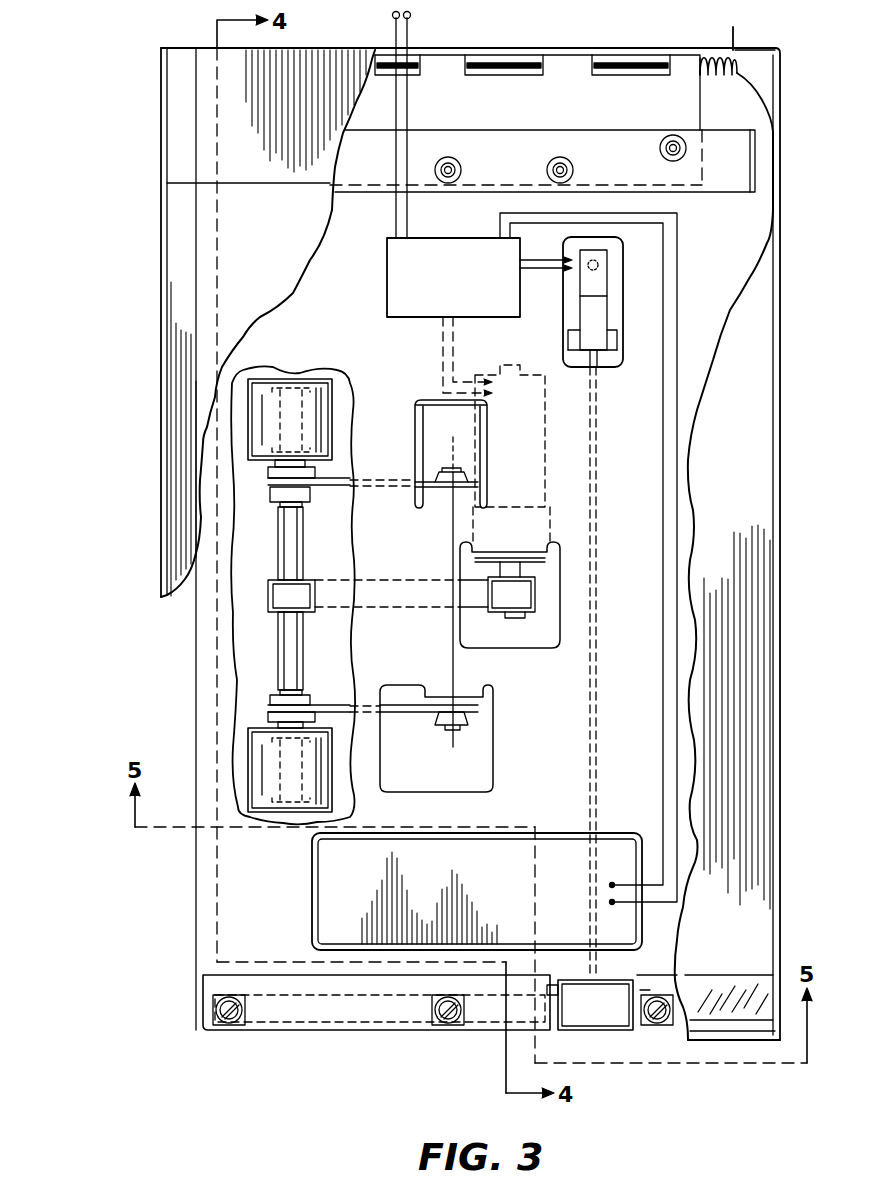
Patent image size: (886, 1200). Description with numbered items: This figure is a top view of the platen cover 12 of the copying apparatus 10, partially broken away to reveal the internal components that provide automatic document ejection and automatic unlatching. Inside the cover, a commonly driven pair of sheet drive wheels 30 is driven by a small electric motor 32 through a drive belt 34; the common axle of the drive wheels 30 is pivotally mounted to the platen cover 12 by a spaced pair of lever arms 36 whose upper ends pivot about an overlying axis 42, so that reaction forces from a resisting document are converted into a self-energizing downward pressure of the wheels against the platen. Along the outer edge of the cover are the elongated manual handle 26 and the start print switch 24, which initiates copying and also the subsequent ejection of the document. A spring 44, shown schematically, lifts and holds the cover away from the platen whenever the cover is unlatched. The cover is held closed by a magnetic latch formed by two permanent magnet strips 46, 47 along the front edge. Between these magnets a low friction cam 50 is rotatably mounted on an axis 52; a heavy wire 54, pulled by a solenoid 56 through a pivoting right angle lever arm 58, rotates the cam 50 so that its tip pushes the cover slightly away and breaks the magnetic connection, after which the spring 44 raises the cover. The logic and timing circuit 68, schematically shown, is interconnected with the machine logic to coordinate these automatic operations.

The copying apparatus 10 is at (118, 215).
The platen cover 12 is at (178, 352).
The start print switch 24 is at (312, 900).
The manual handle 26 is at (735, 985).
The sheet drive wheels 30 is at (318, 440).
The electric motor 32 is at (478, 432).
The drive belt 34 is at (481, 598).
The lever arms 36 is at (333, 490).
The axis 42 is at (453, 738).
The spring 44 is at (709, 57).
The permanent magnet strip 46 is at (332, 1032).
The permanent magnet strip 47 is at (664, 1018).
The cam 50 is at (612, 1014).
The axis 52 is at (552, 988).
The wire 54 is at (598, 353).
The solenoid 56 is at (630, 260).
The right angle lever arm 58 is at (598, 324).
The logic and timing circuit 68 is at (387, 254).